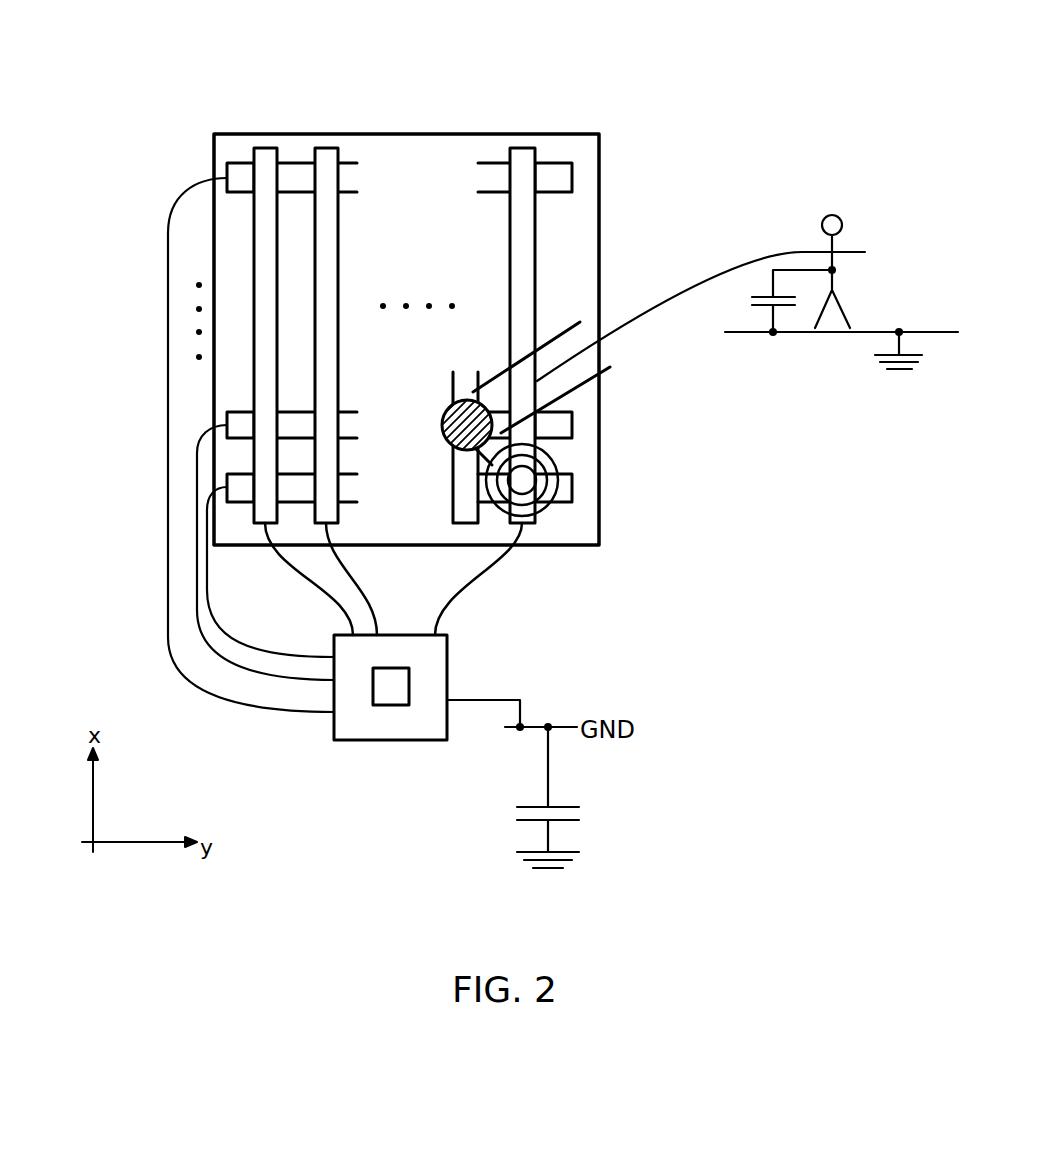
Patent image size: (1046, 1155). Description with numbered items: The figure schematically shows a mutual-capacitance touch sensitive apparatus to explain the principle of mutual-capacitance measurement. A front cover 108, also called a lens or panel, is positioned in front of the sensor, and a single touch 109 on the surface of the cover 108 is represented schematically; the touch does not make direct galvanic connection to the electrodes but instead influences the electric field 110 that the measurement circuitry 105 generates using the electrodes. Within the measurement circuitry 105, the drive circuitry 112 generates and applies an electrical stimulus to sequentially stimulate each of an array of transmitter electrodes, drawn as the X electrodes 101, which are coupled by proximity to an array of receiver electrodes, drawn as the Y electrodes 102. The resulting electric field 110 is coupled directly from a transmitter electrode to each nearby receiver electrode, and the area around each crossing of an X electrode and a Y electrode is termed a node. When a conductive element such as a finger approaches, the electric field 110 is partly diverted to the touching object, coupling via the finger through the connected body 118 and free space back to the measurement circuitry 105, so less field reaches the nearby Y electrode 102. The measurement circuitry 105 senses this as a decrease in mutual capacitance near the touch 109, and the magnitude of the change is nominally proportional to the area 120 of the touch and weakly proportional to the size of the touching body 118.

The X electrodes 101 is at (130, 172).
The Y electrodes 102 is at (523, 92).
The measurement circuitry 105 is at (424, 726).
The front cover 108 is at (603, 148).
The touch 109 is at (465, 457).
The electric field 110 is at (543, 515).
The drive circuitry 112 is at (409, 687).
The body 118 is at (845, 242).
The area of the touch 120 is at (460, 425).